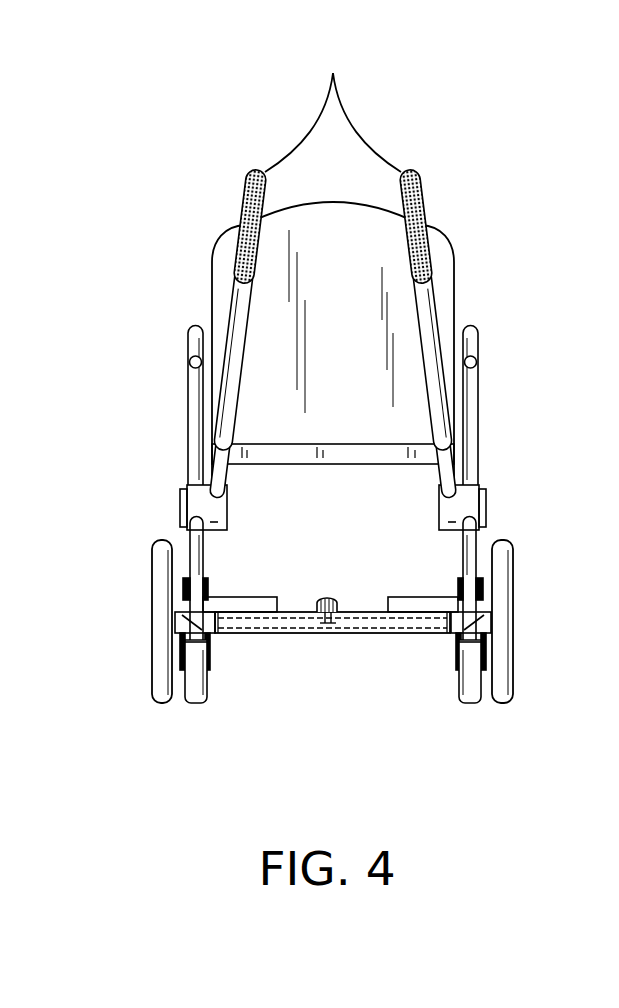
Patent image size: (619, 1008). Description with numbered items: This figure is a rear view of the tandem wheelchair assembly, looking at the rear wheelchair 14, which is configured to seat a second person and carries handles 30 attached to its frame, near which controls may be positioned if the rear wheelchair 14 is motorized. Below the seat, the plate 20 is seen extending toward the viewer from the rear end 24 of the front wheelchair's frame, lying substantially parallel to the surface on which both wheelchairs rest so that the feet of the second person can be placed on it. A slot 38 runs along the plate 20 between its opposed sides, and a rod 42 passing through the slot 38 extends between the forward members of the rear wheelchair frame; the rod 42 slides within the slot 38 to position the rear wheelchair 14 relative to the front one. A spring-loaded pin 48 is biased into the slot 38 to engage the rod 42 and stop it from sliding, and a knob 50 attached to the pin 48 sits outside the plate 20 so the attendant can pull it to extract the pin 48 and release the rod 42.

The rear wheelchair 14 is at (368, 323).
The plate 20 is at (263, 633).
The rear end 24 is at (437, 632).
The handles 30 is at (333, 101).
The slot 38 is at (363, 623).
The rod 42 is at (407, 623).
The pin 48 is at (327, 618).
The knob 50 is at (327, 603).